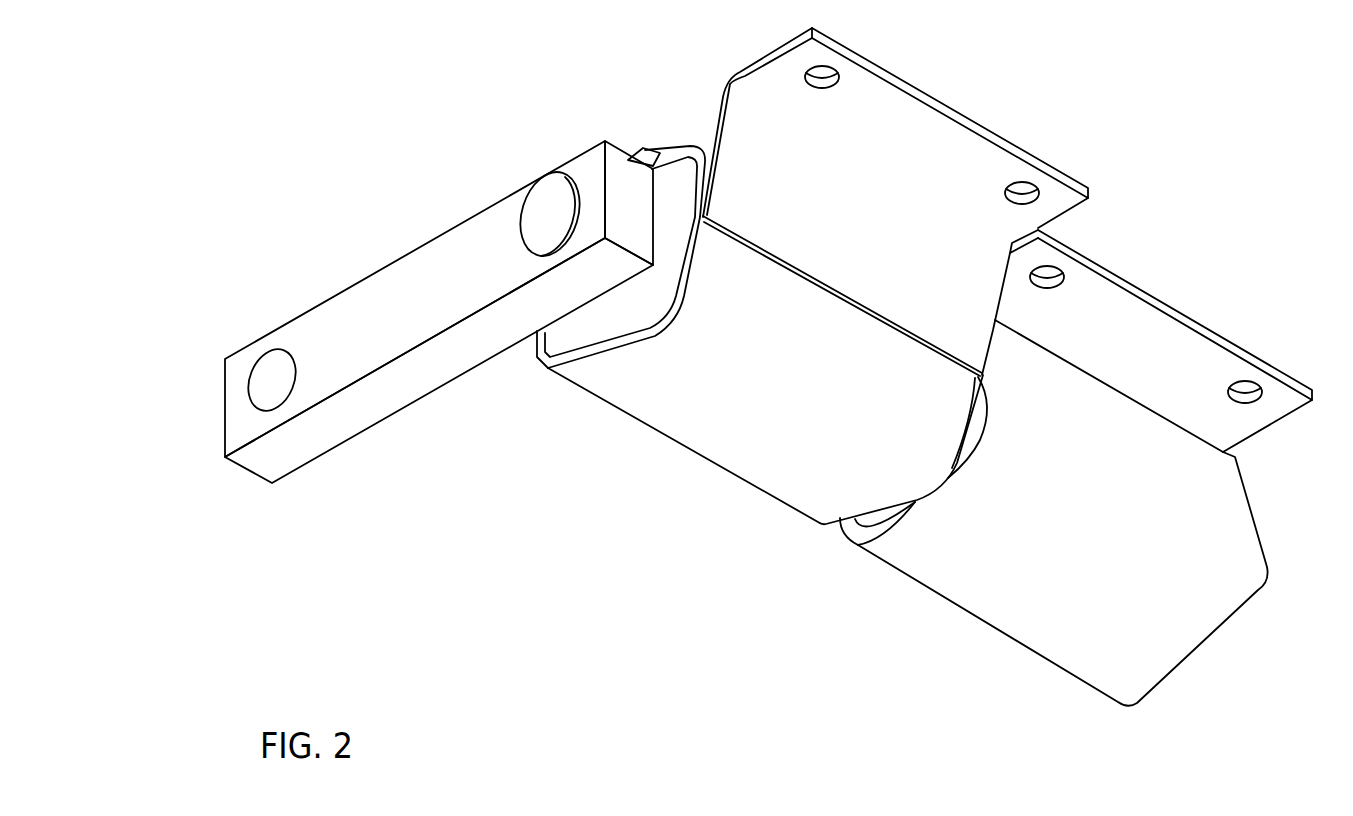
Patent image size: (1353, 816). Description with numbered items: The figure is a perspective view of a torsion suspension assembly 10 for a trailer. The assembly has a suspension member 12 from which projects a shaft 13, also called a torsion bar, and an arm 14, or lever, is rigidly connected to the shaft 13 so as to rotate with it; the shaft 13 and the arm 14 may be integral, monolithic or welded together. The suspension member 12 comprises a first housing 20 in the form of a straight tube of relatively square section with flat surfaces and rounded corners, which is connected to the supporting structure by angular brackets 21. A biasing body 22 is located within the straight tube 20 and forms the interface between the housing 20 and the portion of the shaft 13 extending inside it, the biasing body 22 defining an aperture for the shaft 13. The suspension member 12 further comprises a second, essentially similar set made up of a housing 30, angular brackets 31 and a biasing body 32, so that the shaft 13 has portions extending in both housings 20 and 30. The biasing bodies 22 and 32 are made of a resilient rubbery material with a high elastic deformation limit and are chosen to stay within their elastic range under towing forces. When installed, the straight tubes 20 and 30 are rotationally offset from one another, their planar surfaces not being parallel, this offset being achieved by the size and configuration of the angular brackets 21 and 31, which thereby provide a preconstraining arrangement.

The torsion suspension assembly 10 is at (456, 130).
The suspension member 12 is at (773, 603).
The shaft 13 is at (548, 207).
The arm 14 is at (408, 375).
The housing 20 is at (760, 425).
The angular brackets 21 is at (638, 148).
The biasing body 22 is at (672, 238).
The housing 30 is at (1083, 575).
The angular brackets 31 is at (1157, 330).
The biasing body 32 is at (970, 420).